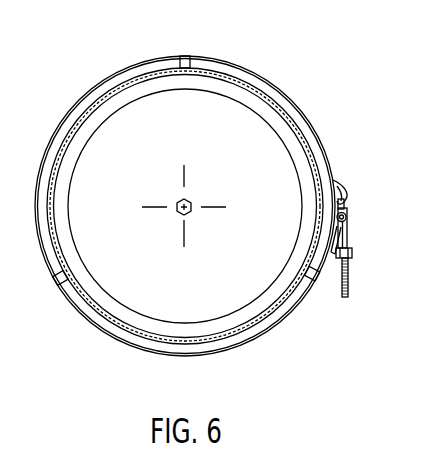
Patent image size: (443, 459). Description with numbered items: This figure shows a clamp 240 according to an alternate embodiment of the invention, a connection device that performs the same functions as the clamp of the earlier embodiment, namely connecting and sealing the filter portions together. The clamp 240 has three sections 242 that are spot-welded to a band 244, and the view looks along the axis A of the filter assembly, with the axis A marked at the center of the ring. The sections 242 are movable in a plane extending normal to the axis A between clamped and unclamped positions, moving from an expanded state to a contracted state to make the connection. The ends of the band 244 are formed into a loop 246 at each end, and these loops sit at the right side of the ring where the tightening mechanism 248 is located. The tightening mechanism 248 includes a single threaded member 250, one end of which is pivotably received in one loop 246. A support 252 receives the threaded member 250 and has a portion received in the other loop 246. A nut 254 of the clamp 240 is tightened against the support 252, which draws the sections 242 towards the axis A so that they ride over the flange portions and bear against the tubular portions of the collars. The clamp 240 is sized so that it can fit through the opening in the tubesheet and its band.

The clamp 240 is at (347, 85).
The sections 242 is at (102, 88).
The band 244 is at (193, 55).
The loop 246 is at (348, 189).
The tightening mechanism 248 is at (366, 255).
The threaded member 250 is at (356, 298).
The support 252 is at (353, 237).
The nut 254 is at (353, 260).
The axis A is at (189, 202).